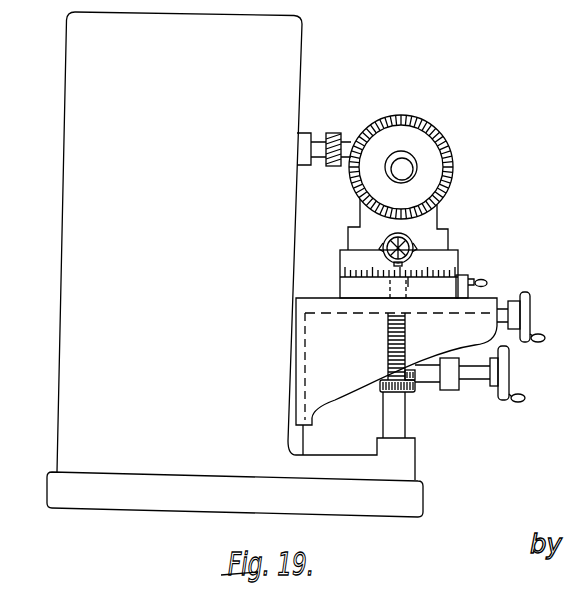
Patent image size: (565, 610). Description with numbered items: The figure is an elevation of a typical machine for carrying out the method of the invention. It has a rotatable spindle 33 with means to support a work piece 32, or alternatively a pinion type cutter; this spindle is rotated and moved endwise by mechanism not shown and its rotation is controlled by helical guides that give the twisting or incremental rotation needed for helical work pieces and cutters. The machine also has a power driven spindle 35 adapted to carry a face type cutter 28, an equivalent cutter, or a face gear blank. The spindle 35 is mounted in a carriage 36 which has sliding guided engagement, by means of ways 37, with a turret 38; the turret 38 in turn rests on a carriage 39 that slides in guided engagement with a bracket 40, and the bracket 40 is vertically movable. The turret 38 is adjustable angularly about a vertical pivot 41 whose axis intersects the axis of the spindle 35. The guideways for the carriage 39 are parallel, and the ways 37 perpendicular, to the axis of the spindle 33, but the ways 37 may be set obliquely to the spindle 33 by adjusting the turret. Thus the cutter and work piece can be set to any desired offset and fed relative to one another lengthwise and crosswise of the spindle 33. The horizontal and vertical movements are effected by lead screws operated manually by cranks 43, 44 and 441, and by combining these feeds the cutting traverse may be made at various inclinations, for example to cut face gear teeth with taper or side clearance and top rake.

The face type cutter 28 is at (357, 192).
The work piece 32 is at (335, 133).
The rotatable spindle 33 is at (311, 136).
The power driven spindle 35 is at (410, 177).
The carriage 36 is at (439, 224).
The ways 37 is at (382, 245).
The turret 38 is at (458, 256).
The carriage 39 is at (443, 295).
The bracket 40 is at (487, 312).
The vertical pivot 41 is at (396, 265).
The crank 43 is at (415, 259).
The crank 44 is at (539, 335).
The crank 441 is at (509, 367).